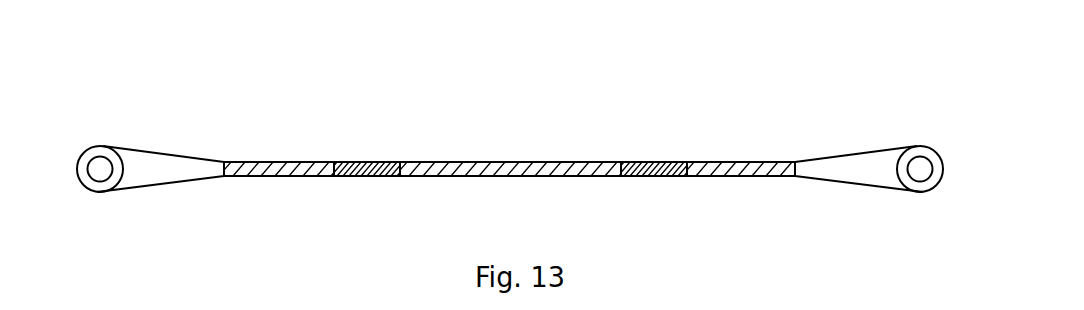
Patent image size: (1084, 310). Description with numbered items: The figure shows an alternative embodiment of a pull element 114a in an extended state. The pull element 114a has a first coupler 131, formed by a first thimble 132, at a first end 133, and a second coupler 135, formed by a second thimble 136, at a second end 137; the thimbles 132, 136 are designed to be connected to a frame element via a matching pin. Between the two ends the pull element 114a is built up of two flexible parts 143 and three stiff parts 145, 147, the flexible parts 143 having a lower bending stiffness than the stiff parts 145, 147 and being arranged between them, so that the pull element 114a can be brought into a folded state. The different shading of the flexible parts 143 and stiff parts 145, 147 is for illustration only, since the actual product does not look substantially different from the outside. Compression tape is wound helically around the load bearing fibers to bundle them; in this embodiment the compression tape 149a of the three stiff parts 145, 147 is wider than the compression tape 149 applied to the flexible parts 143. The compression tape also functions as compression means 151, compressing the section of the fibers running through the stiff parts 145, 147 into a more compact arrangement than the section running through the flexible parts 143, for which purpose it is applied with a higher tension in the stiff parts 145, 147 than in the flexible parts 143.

The pull element 114a is at (305, 95).
The first coupler 131 is at (90, 123).
The first thimble 132 is at (101, 138).
The first end 133 is at (165, 108).
The second coupler 135 is at (911, 123).
The second thimble 136 is at (923, 131).
The second end 137 is at (825, 110).
The flexible parts 143 is at (372, 148).
The stiff parts 145 is at (276, 145).
The stiff part 147 is at (503, 148).
The compression tape 149 is at (366, 170).
The compression tape 149a is at (522, 201).
The compression means 151 is at (278, 169).